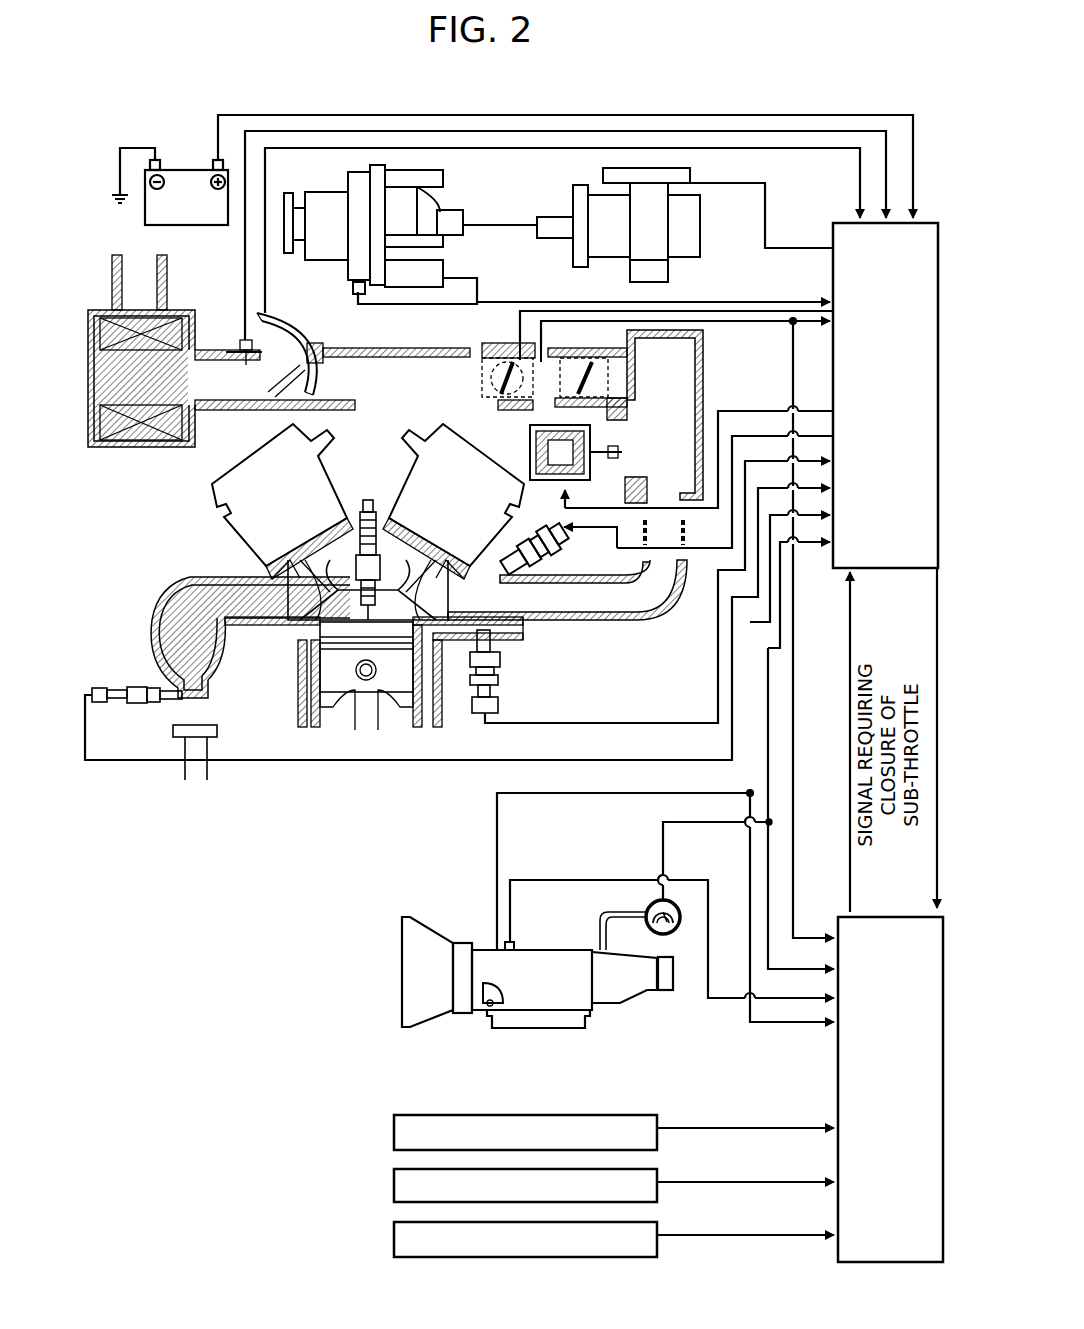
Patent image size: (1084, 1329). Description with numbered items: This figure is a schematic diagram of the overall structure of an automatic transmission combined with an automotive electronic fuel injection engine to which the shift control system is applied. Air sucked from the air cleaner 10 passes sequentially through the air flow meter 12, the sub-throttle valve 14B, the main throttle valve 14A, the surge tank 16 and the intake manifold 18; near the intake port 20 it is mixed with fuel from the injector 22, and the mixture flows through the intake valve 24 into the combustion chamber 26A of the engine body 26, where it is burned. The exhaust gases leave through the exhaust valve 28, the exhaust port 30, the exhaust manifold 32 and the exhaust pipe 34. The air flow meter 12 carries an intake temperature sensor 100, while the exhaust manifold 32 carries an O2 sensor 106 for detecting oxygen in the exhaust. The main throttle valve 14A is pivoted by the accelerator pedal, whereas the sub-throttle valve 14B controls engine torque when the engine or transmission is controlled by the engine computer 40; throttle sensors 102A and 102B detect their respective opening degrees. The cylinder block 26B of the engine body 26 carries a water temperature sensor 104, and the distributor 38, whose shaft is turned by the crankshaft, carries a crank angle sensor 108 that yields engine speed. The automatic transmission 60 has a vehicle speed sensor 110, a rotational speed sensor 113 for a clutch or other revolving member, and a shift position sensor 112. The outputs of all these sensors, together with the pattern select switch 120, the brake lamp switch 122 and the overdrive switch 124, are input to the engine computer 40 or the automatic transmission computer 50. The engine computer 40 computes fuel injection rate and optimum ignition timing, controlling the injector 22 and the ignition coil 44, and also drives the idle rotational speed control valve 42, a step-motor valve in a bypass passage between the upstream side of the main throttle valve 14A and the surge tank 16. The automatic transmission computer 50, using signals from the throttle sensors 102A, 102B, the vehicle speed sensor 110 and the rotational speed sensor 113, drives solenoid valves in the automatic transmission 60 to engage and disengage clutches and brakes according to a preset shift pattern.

The air cleaner 10 is at (120, 370).
The air flow meter 12 is at (298, 345).
The main throttle valve 14A is at (600, 372).
The sub-throttle valve 14B is at (368, 492).
The surge tank 16 is at (677, 452).
The intake manifold 18 is at (547, 603).
The intake port 20 is at (440, 592).
The injector 22 is at (560, 548).
The intake valve 24 is at (414, 586).
The engine body 26 is at (296, 706).
The combustion chamber 26A is at (318, 640).
The cylinder block 26B is at (440, 690).
The exhaust valve 28 is at (325, 586).
The exhaust port 30 is at (297, 592).
The exhaust manifold 32 is at (198, 600).
The exhaust pipe 34 is at (206, 770).
The distributor 38 is at (325, 198).
The engine computer 40 is at (836, 236).
The idle rotational speed control valve 42 is at (536, 452).
The ignition coil 44 is at (690, 240).
The automatic transmission computer 50 is at (838, 922).
The automatic transmission 60 is at (548, 948).
The intake temperature sensor 100 is at (238, 345).
The throttle sensor 102A is at (553, 357).
The throttle sensor 102B is at (500, 350).
The water temperature sensor 104 is at (490, 652).
The O2 sensor 106 is at (172, 680).
The crank angle sensor 108 is at (353, 288).
The vehicle speed sensor 110 is at (675, 935).
The shift position sensor 112 is at (498, 1005).
The rotational speed sensor 113 is at (505, 942).
The pattern select switch 120 is at (394, 1128).
The brake lamp switch 122 is at (394, 1185).
The overdrive switch 124 is at (394, 1240).